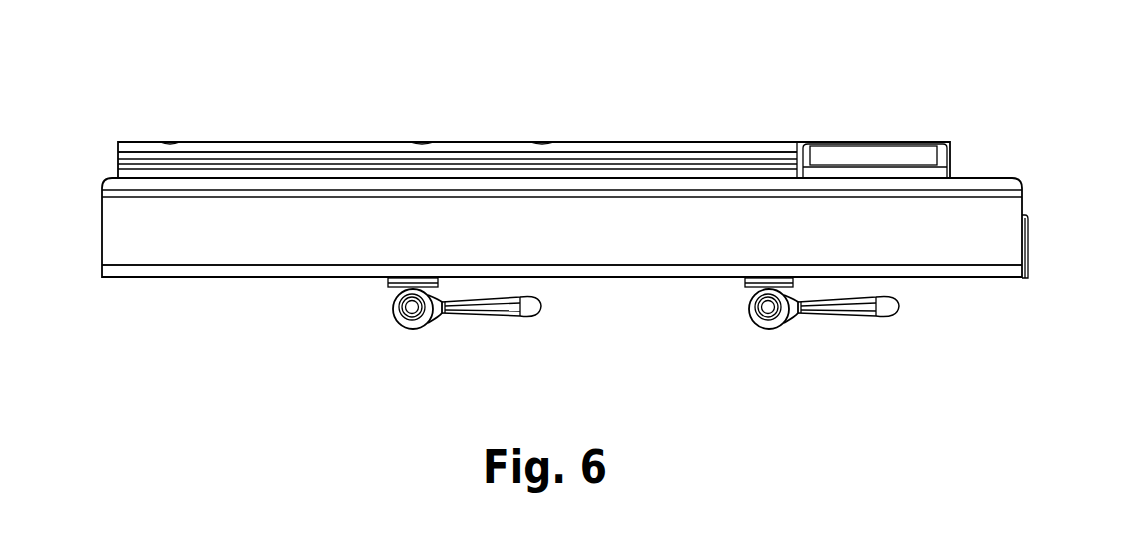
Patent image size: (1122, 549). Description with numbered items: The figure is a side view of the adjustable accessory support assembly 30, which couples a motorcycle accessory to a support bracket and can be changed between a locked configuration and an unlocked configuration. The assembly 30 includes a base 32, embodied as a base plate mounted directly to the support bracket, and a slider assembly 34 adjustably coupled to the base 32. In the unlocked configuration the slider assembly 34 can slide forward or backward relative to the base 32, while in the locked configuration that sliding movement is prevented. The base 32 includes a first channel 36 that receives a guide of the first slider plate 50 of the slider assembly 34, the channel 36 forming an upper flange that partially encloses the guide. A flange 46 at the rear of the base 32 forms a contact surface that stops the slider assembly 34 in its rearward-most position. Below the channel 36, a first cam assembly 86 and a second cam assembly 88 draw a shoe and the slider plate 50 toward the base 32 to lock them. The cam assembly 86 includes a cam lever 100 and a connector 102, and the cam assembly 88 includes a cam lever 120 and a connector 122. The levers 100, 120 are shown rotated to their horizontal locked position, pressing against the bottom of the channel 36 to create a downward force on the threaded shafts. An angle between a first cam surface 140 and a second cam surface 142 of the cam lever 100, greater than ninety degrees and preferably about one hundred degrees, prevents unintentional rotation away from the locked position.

The adjustable accessory support assembly 30 is at (405, 45).
The base 32 is at (211, 278).
The slider assembly 34 is at (507, 141).
The first channel 36 is at (323, 245).
The flange 46 is at (1030, 245).
The first slider plate 50 is at (316, 143).
The first cam assembly 86 is at (436, 315).
The second cam assembly 88 is at (792, 344).
The cam lever 100 is at (535, 318).
The connector 102 is at (395, 312).
The cam lever 120 is at (886, 318).
The connector 122 is at (752, 312).
The first cam surface 140 is at (395, 301).
The second cam surface 142 is at (420, 282).